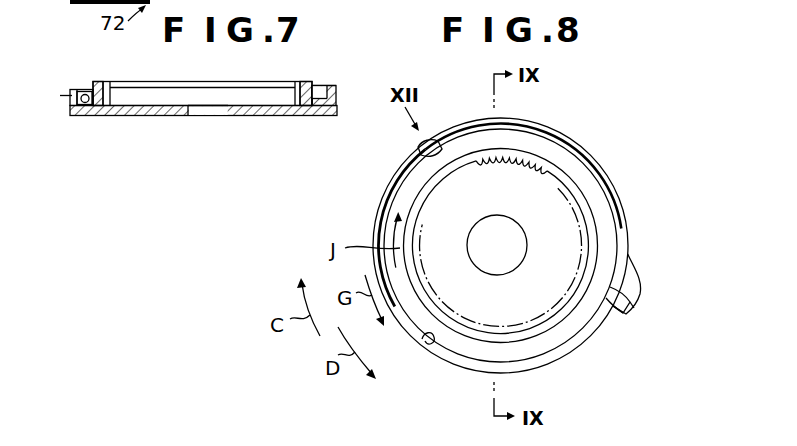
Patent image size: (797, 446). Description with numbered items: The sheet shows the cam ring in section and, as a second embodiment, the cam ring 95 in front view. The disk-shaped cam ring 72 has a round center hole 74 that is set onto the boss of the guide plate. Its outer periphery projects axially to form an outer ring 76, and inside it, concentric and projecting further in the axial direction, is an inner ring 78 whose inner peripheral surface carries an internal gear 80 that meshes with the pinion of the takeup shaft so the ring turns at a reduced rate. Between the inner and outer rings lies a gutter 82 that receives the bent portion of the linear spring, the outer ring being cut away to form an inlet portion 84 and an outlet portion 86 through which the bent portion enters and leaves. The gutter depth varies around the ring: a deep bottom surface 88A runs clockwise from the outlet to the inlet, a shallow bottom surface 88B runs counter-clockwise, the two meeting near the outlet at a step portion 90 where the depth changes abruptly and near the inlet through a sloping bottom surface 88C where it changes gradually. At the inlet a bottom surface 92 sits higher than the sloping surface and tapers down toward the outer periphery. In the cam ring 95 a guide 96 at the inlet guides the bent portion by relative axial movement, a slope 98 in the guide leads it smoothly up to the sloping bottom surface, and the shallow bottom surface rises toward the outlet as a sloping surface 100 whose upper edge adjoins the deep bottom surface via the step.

In FIG. 7, the cam ring 72 is at (253, 117).
In FIG. 7, the center hole 74 is at (197, 113).
In FIG. 7, the outer ring 76 is at (333, 88).
In FIG. 8, the outer ring 76 is at (381, 218).
In FIG. 7, the inner ring 78 is at (97, 82).
In FIG. 8, the inner ring 78 is at (458, 137).
In FIG. 7, the internal gear 80 is at (297, 82).
In FIG. 8, the internal gear 80 is at (471, 163).
In FIG. 7, the gutter 82 is at (88, 88).
In FIG. 8, the gutter 82 is at (426, 343).
In FIG. 7, the inlet portion 84 is at (68, 94).
In FIG. 8, the inlet portion 84 is at (618, 300).
In FIG. 7, the outlet portion 86 is at (335, 94).
In FIG. 8, the outlet portion 86 is at (420, 146).
In FIG. 8, the deep bottom surface 88A is at (555, 152).
In FIG. 7, the shallow bottom surface 88B is at (85, 113).
In FIG. 8, the shallow bottom surface 88B is at (553, 343).
In FIG. 8, the sloping bottom surface 88C is at (620, 270).
In FIG. 7, the step portion 90 is at (322, 107).
In FIG. 7, the bottom surface of the inlet portion 92 is at (70, 98).
In FIG. 8, the cam ring 95 is at (370, 203).
In FIG. 8, the guide 96 is at (635, 308).
In FIG. 8, the slope 98 is at (616, 314).
In FIG. 8, the sloping surface 100 is at (390, 178).